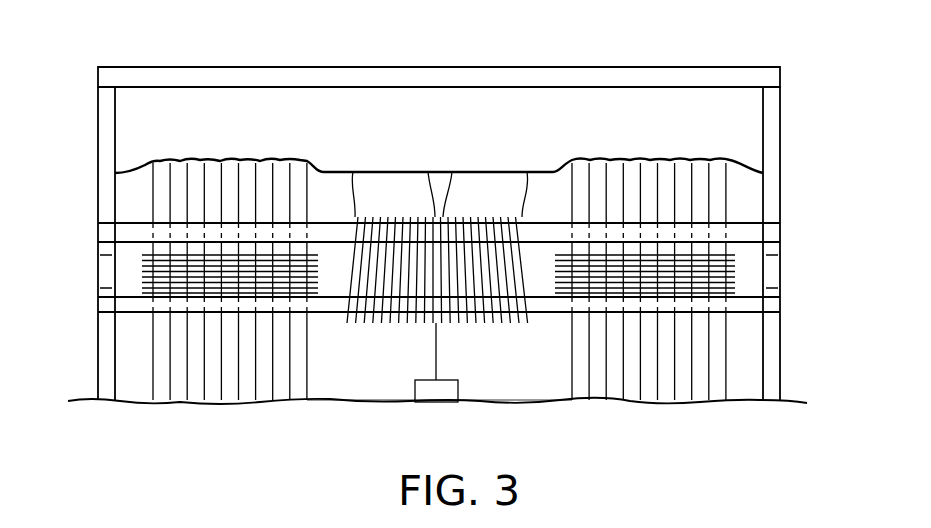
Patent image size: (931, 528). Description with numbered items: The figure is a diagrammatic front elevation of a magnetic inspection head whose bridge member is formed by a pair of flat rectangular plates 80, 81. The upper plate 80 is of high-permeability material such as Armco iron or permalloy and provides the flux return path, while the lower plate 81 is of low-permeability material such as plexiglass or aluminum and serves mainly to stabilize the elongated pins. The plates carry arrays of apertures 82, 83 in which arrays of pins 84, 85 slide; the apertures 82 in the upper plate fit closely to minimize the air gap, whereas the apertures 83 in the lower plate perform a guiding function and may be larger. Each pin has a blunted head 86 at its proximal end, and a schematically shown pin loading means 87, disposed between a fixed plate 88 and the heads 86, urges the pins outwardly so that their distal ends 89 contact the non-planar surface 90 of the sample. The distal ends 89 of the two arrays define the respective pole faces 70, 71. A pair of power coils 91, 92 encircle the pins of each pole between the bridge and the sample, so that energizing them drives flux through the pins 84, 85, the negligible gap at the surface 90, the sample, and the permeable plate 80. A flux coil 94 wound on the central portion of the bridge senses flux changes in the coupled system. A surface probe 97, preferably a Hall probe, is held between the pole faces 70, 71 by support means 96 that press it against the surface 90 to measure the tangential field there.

The pole face 70 is at (214, 410).
The pole face 71 is at (688, 414).
The upper plate 80 is at (782, 234).
The lower plate 81 is at (772, 310).
The array of apertures 82 is at (312, 233).
The array of apertures 83 is at (308, 315).
The array of pins 84 is at (148, 203).
The array of pins 85 is at (730, 195).
The blunted heads 86 is at (152, 164).
The pin loading means 87 is at (580, 108).
The fixed plate 88 is at (517, 77).
The distal ends 89 is at (318, 394).
The non-planar surface 90 is at (340, 403).
The power coil 91 is at (112, 288).
The power coil 92 is at (750, 253).
The flux coil 94 is at (435, 343).
The support means 96 is at (437, 366).
The surface probe 97 is at (433, 395).